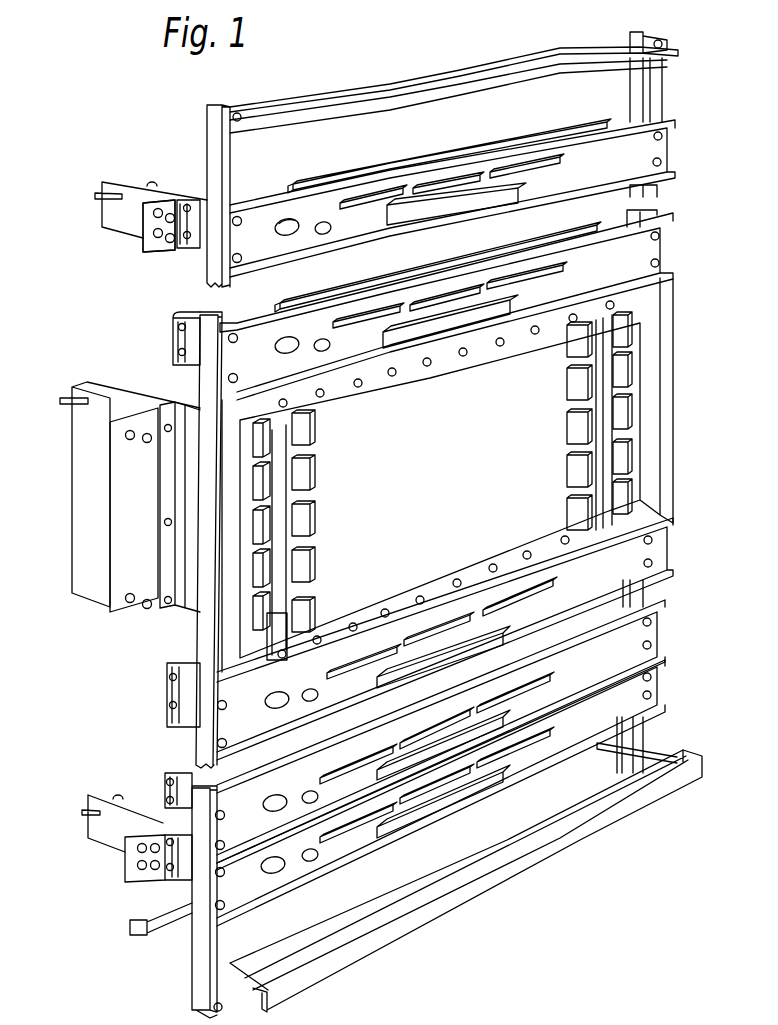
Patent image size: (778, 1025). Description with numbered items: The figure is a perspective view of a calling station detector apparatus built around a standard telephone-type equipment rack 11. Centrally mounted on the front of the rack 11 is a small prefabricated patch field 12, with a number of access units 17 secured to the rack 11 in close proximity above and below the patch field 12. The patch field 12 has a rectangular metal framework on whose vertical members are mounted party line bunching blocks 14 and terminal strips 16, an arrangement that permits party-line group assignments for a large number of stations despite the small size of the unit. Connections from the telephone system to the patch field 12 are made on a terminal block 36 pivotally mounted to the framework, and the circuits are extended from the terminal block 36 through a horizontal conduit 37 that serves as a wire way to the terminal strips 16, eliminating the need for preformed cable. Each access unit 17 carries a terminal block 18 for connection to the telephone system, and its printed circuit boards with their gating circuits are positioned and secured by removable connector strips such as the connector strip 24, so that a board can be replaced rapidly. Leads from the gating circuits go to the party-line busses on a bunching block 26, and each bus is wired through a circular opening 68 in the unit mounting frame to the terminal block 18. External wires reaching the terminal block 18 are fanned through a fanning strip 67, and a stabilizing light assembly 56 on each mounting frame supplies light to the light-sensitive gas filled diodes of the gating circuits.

The equipment rack 11 is at (418, 82).
The prefabricated patch field 12 is at (682, 384).
The bunching block 14 is at (313, 423).
The terminal strip 16 is at (297, 490).
The access unit 17 is at (657, 147).
The terminal block 18 is at (115, 182).
The connector strip 24 is at (577, 165).
The bunching block 26 is at (534, 191).
The terminal block 36 is at (85, 477).
The horizontal conduit 37 is at (302, 180).
The stabilizing light assembly 56 is at (275, 236).
The fanning strip 67 is at (147, 247).
The circular opening 68 is at (333, 228).